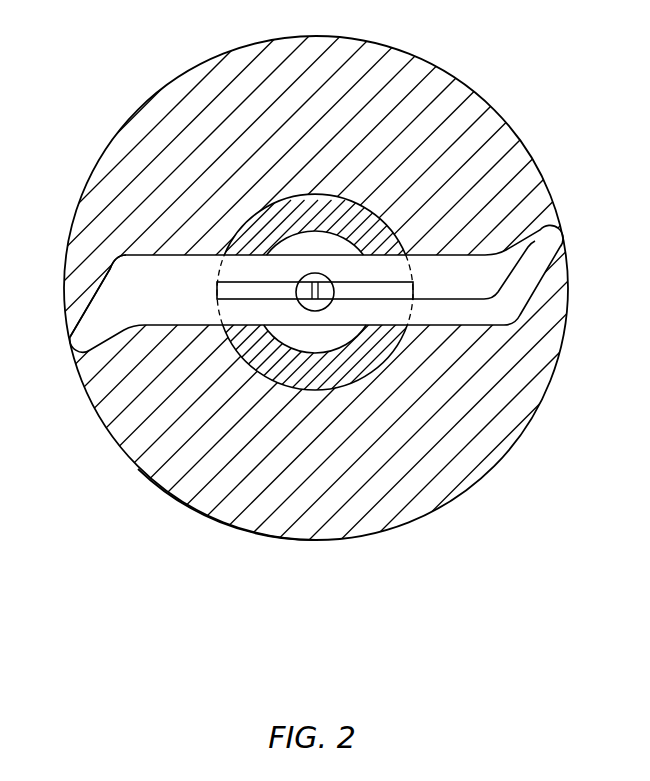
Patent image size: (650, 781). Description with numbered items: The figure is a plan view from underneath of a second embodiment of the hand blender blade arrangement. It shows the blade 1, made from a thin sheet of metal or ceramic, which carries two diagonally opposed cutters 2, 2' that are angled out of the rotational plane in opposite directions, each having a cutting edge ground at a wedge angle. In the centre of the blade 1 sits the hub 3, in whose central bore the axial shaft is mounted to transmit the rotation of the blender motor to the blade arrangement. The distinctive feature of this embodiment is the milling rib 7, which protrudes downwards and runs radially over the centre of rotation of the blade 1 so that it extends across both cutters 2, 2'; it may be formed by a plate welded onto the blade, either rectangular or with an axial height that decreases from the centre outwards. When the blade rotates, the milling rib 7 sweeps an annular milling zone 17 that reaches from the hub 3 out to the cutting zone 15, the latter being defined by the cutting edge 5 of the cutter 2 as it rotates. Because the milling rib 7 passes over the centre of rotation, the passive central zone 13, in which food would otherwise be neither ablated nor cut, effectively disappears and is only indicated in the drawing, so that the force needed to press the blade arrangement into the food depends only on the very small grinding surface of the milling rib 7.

The blade 1 is at (144, 236).
The cutter 2 is at (316, 230).
The cutter 2' is at (86, 343).
The hub 3 is at (331, 252).
The cutting edge 5 is at (527, 347).
The milling rib 7 is at (382, 325).
The passive central zone 13 is at (312, 287).
The cutting zone 15 is at (467, 445).
The annular milling zone 17 is at (200, 427).